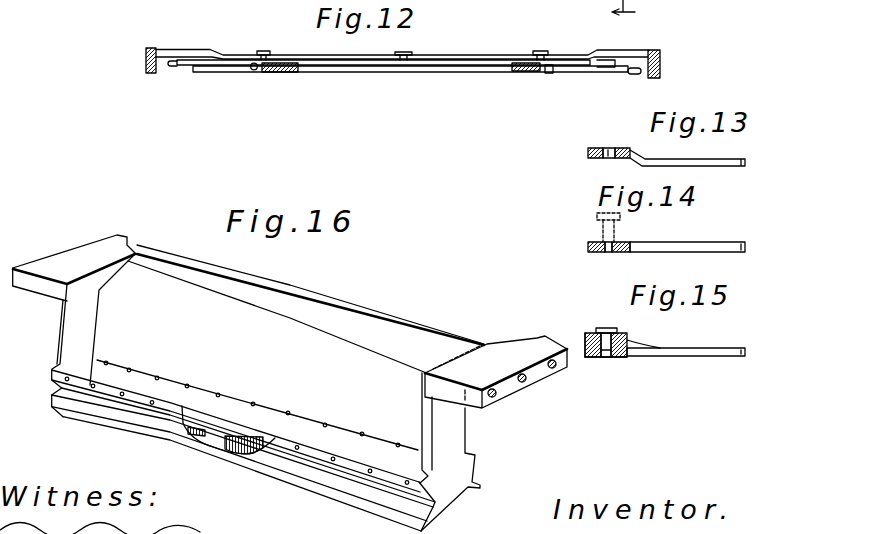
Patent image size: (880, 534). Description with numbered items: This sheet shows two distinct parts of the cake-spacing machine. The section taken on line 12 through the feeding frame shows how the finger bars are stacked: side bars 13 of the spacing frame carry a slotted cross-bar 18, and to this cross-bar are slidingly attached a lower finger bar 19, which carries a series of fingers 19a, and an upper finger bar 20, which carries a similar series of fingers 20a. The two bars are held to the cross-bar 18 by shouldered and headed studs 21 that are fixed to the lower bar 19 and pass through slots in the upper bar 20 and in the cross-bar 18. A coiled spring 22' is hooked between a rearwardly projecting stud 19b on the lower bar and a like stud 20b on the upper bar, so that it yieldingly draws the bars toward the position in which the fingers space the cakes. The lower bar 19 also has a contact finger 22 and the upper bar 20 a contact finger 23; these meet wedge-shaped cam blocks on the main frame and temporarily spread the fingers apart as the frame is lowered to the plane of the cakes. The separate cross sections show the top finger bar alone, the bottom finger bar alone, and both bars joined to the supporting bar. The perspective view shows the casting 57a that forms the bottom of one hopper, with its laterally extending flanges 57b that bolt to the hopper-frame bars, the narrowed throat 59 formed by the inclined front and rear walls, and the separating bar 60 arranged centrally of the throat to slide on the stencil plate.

In FIG. 12, the section line 12 is at (629, 15).
In FIG. 12, the side bars 13 is at (145, 50).
In FIG. 12, the slotted cross-bar 18 is at (197, 53).
In FIG. 15, the slotted cross-bar 18 is at (628, 332).
In FIG. 12, the lower finger bar 19 is at (385, 65).
In FIG. 14, the lower finger bar 19 is at (586, 250).
In FIG. 15, the lower finger bar 19 is at (596, 358).
In FIG. 14, the fingers 19a is at (725, 237).
In FIG. 15, the fingers 19a is at (730, 348).
In FIG. 12, the rearwardly projecting stud 19b is at (256, 70).
In FIG. 12, the upper finger bar 20 is at (303, 69).
In FIG. 13, the upper finger bar 20 is at (588, 153).
In FIG. 15, the upper finger bar 20 is at (586, 345).
In FIG. 13, the fingers 20a is at (712, 168).
In FIG. 15, the fingers 20a is at (640, 346).
In FIG. 12, the stud 20b is at (545, 72).
In FIG. 12, the shouldered and headed studs 21 is at (268, 52).
In FIG. 14, the shouldered and headed studs 21 is at (622, 217).
In FIG. 15, the shouldered and headed studs 21 is at (596, 331).
In FIG. 12, the contact finger 22 is at (626, 85).
In FIG. 12, the coiled spring 22' is at (401, 73).
In FIG. 12, the contact finger 23 is at (174, 66).
In FIG. 16, the casting 57a is at (76, 327).
In FIG. 16, the laterally extending plates or flanges 57b is at (42, 262).
In FIG. 16, the throat 59 is at (355, 450).
In FIG. 16, the separating bar 60 is at (218, 435).